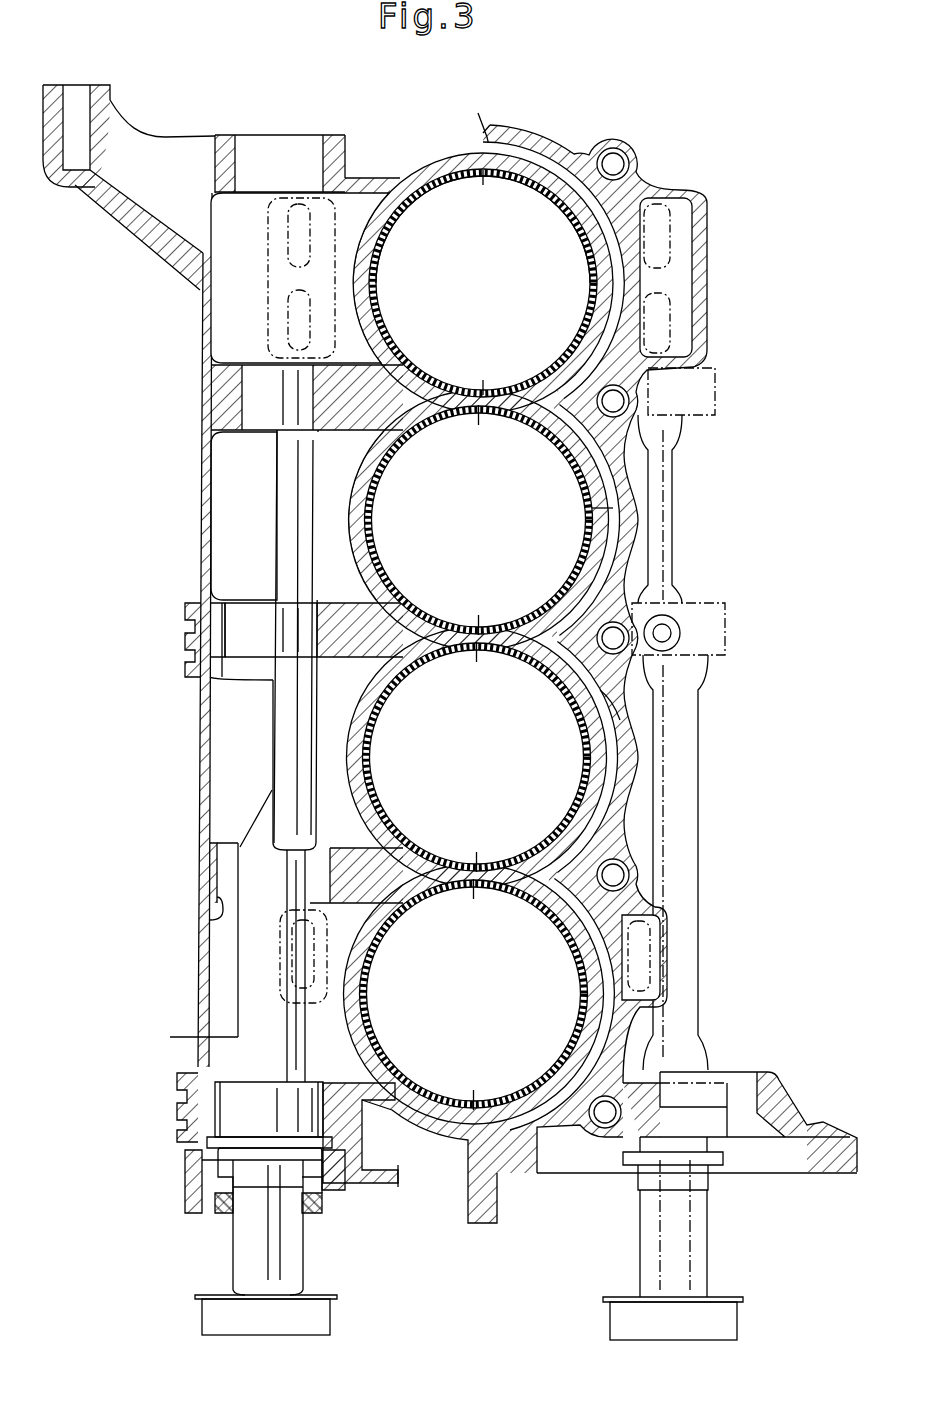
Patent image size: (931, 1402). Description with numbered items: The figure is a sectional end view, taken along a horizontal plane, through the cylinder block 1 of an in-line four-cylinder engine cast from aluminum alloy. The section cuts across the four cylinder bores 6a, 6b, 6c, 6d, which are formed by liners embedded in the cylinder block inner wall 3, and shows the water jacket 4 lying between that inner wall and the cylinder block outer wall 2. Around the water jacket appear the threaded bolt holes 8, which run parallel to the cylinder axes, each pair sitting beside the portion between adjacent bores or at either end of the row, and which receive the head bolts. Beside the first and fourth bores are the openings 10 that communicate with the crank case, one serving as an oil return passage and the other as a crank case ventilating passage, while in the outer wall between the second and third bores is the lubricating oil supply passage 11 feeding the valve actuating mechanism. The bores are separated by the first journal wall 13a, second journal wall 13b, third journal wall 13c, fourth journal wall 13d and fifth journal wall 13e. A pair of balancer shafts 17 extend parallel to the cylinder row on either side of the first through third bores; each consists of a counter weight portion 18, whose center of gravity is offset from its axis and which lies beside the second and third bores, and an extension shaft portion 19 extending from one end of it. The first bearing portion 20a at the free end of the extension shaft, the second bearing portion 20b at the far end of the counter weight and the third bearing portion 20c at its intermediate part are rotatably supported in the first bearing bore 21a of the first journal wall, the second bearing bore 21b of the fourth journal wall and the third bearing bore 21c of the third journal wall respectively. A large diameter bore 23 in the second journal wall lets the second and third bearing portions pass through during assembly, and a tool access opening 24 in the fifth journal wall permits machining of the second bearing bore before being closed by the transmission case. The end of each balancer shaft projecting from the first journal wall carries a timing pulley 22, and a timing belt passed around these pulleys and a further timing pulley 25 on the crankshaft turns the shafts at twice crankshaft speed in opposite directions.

The cylinder block 1 is at (765, 117).
The cylinder block outer wall 2 is at (598, 452).
The cylinder block inner wall 3 is at (613, 507).
The water jacket 4 is at (612, 710).
The first cylinder bore 6a is at (425, 1100).
The second cylinder bore 6b is at (545, 852).
The third cylinder bore 6c is at (545, 615).
The fourth cylinder bore 6d is at (547, 378).
The threaded bolt holes 8 is at (618, 158).
The openings 10 is at (292, 312).
The lubricating oil supply passage 11 is at (680, 631).
The first journal wall 13a is at (367, 1062).
The second journal wall 13b is at (370, 827).
The third journal wall 13c is at (372, 590).
The fourth journal wall 13d is at (372, 355).
The fifth journal wall 13e is at (380, 206).
The balancer shafts 17 is at (270, 753).
The counter weight portion 18 is at (320, 756).
The extension shaft portion 19 is at (238, 1037).
The first bearing portion 20a is at (207, 1143).
The second bearing portion 20b is at (262, 380).
The third bearing portion 20c is at (240, 612).
The first bearing bore 21a is at (215, 1084).
The second bearing bore 21b is at (248, 420).
The third bearing bore 21c is at (242, 665).
The timing pulley 22 is at (332, 1313).
The large diameter bore 23 is at (210, 910).
The tool access opening 24 is at (245, 160).
The timing pulley 25 is at (200, 572).